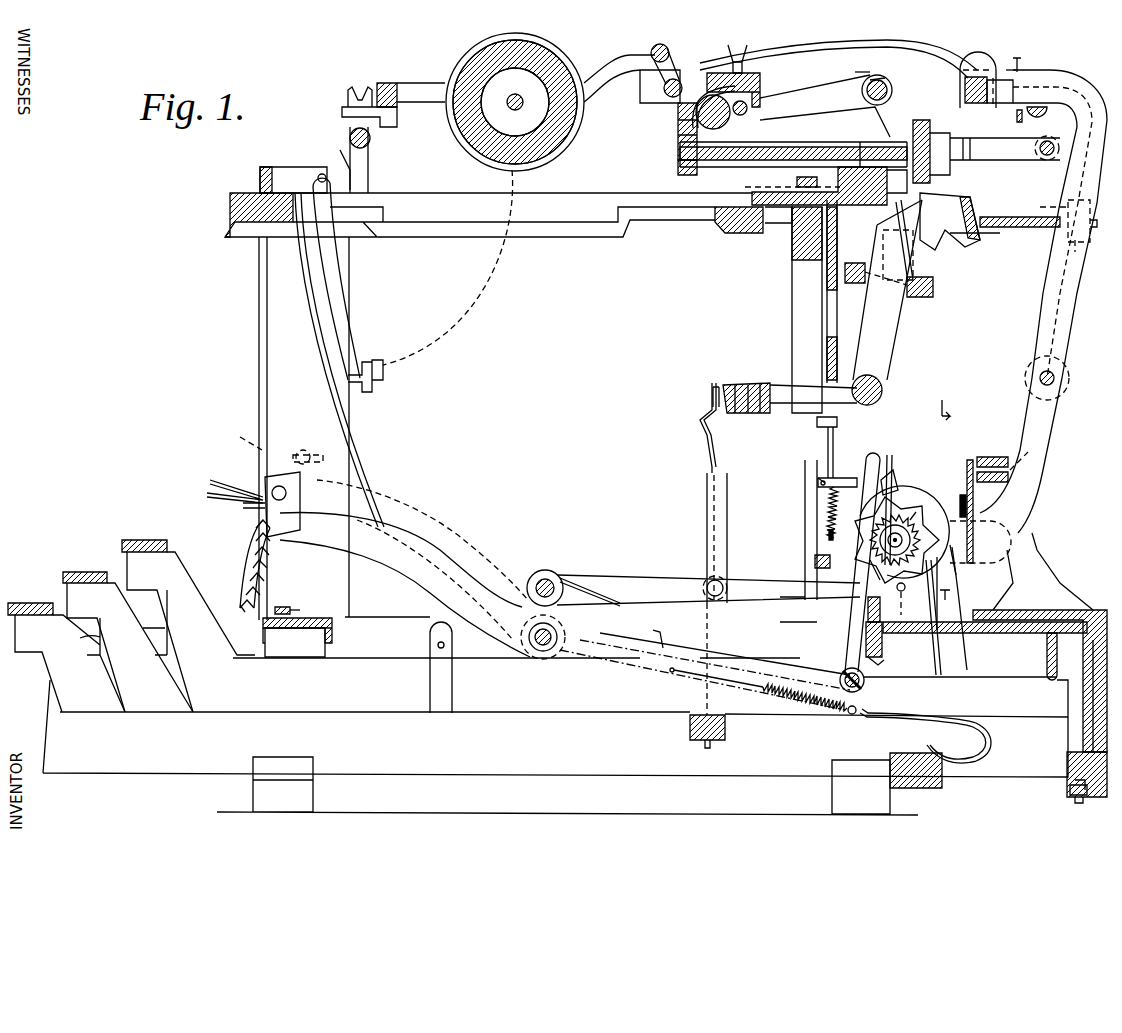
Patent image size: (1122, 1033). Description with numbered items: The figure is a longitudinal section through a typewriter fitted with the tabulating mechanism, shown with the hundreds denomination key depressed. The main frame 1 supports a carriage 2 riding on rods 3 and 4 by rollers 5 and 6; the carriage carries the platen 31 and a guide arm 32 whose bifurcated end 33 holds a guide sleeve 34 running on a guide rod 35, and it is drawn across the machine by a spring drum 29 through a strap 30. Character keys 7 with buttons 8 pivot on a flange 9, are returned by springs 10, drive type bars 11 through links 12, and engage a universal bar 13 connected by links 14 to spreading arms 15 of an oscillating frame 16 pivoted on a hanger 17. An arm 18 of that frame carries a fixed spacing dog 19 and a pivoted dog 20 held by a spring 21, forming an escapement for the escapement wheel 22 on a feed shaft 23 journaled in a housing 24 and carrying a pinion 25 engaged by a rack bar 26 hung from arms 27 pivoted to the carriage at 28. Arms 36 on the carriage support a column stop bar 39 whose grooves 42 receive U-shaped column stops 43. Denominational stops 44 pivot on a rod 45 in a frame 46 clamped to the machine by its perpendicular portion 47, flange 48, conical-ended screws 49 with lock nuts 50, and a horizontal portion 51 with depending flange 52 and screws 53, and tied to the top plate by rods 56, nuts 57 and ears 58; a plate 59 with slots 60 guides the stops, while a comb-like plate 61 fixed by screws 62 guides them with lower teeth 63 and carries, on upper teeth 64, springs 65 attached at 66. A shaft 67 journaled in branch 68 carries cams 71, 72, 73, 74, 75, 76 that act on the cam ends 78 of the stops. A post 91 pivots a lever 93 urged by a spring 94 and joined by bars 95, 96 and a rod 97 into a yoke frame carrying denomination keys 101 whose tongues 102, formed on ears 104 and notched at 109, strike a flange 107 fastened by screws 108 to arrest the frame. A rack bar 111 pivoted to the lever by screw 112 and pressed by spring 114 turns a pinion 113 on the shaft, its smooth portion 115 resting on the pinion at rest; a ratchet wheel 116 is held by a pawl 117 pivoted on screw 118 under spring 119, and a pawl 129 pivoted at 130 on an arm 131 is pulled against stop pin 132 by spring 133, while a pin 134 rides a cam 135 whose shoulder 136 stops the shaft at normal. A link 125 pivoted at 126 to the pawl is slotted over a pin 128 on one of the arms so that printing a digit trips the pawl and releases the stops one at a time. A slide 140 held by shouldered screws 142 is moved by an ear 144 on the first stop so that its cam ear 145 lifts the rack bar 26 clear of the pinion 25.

The main frame 1 is at (230, 207).
The carriage 2 is at (398, 95).
The rod 3 is at (371, 144).
The rod 4 is at (731, 112).
The roller 5 is at (364, 89).
The roller 6 is at (728, 66).
The character keys 7 is at (380, 713).
The buttons 8 is at (86, 576).
The flange 9 is at (1046, 677).
The springs 10 is at (888, 722).
The type bars 11 is at (338, 301).
The links 12 is at (352, 457).
The universal bar 13 is at (690, 729).
The links 14 is at (704, 416).
The spreading arms 15 is at (748, 385).
The oscillating frame 16 is at (865, 406).
The hanger 17 is at (834, 355).
The arm 18 is at (887, 324).
The spacing dog 19 is at (940, 200).
The spacing dog 20 is at (896, 212).
The spring 21 is at (926, 276).
The escapement wheel 22 is at (918, 125).
The shaft 23 is at (826, 137).
The housing 24 is at (859, 152).
The pinion 25 is at (678, 168).
The rack bar 26 is at (691, 126).
The arms 27 is at (675, 70).
The pivots 28 is at (748, 107).
The spring drum 29 is at (807, 310).
The strap 30 is at (757, 207).
The platen 31 is at (545, 156).
The guide arm 32 is at (825, 106).
The bifurcated end 33 is at (862, 70).
The guide sleeve 34 is at (886, 80).
The guide rod 35 is at (886, 88).
The arm 36 is at (811, 66).
The column stop bar 39 is at (966, 90).
The slits or grooves 42 is at (970, 108).
The column stops 43 is at (969, 63).
The denominational stops 44 is at (1050, 82).
The pivot rod 45 is at (1040, 380).
The frame 46 is at (1043, 571).
The perpendicular portion 47 is at (1093, 798).
The flange 48 is at (1070, 790).
The screws 49 is at (1076, 781).
The lock nuts 50 is at (1073, 801).
The horizontal portion 51 is at (986, 620).
The depending flange 52 is at (879, 665).
The screws 53 is at (882, 648).
The rods 56 is at (1012, 228).
The nuts 57 is at (1060, 207).
The ears 58 is at (1075, 217).
The plate 59 is at (1020, 64).
The slots 60 is at (1010, 72).
The plate 61 is at (973, 500).
The screws 62 is at (963, 494).
The lower teeth 63 is at (980, 542).
The upper teeth 64 is at (976, 458).
The springs 65 is at (991, 458).
The connection point 66 is at (1020, 470).
The shaft 67 is at (895, 540).
The branch 68 is at (868, 610).
The cam 71 is at (941, 628).
The cam 72 is at (936, 631).
The cam 73 is at (962, 620).
The cam 74 is at (921, 526).
The cam 75 is at (915, 496).
The cam 76 is at (900, 489).
The cam ends 78 is at (956, 561).
The post 91 is at (528, 591).
The lever 93 is at (496, 650).
The spring 94 is at (655, 642).
The bar 95 is at (248, 506).
The bar 96 is at (272, 456).
The rod 97 is at (287, 490).
The denomination keys 101 is at (206, 495).
The depending tongues 102 is at (280, 563).
The ears 104 is at (262, 456).
The flange or rib 107 is at (268, 606).
The screws 108 is at (292, 609).
The notches 109 is at (240, 606).
The rack bar 111 is at (848, 649).
The shouldered screw 112 is at (865, 685).
The pinion 113 is at (910, 520).
The spring 114 is at (799, 690).
The smooth portion 115 is at (886, 500).
The ratchet wheel 116 is at (883, 481).
The pawl 117 is at (626, 577).
The screw 118 is at (546, 578).
The spring 119 is at (591, 582).
The link 125 is at (722, 479).
The pivot 126 is at (722, 588).
The pin or shouldered screw 128 is at (718, 385).
The pawl 129 is at (845, 480).
The pivot 130 is at (818, 480).
The arm 131 is at (805, 553).
The stop pin 132 is at (818, 486).
The spring 133 is at (826, 510).
The pin 134 is at (902, 593).
The cam 135 is at (841, 566).
The shoulder 136 is at (828, 531).
The slide 140 is at (793, 134).
The shouldered screws 142 is at (742, 177).
The ear 144 is at (1040, 146).
The cam ear or projection 145 is at (678, 148).